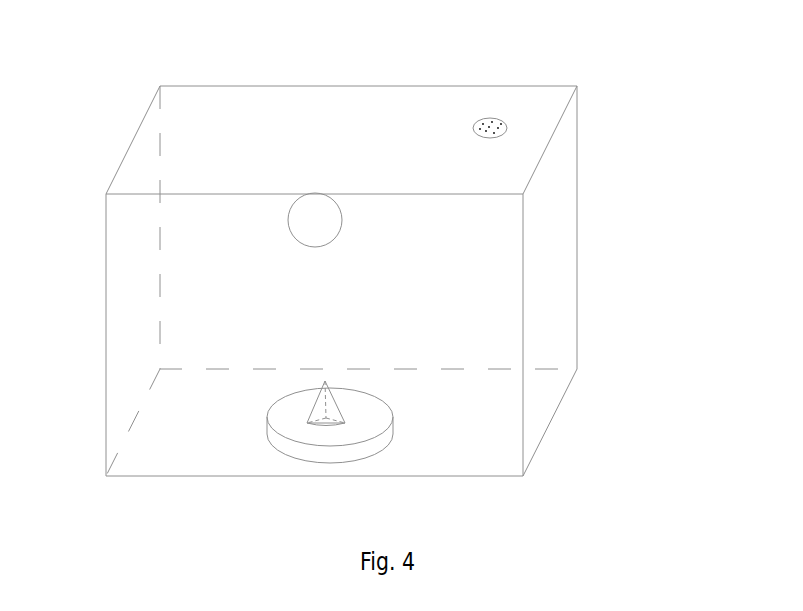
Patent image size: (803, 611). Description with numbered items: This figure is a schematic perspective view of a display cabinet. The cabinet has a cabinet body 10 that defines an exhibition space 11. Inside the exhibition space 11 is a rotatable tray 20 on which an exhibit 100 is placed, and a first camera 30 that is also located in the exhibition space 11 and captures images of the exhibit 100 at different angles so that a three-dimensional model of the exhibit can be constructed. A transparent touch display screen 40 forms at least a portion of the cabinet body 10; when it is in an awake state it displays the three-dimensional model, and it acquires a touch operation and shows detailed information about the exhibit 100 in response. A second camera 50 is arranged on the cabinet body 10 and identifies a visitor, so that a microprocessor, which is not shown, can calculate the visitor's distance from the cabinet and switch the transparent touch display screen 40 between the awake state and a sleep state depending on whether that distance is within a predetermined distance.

The cabinet body 10 is at (368, 87).
The exhibition space 11 is at (375, 163).
The rotatable tray 20 is at (370, 428).
The first camera 30 is at (315, 218).
The transparent touch display screen 40 is at (473, 327).
The second camera 50 is at (502, 121).
The exhibit 100 is at (313, 420).